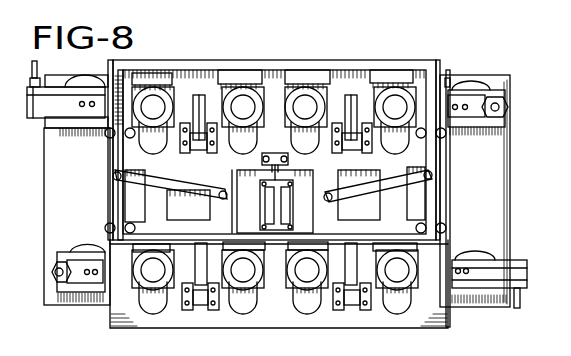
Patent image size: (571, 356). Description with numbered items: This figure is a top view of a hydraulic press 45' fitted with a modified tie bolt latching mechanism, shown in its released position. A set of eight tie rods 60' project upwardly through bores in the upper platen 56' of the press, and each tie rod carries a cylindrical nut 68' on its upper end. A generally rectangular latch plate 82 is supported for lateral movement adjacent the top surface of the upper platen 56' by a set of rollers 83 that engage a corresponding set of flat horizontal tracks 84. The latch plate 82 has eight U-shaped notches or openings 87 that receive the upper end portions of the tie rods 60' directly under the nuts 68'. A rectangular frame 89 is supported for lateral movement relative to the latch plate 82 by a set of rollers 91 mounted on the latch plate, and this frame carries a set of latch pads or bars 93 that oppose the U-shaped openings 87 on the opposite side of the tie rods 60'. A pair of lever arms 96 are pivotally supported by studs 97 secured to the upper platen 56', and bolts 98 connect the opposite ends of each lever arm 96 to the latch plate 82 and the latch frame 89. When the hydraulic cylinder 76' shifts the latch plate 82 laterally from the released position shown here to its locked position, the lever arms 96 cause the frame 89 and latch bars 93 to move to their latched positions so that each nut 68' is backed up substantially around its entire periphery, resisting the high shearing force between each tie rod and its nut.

The press 45' is at (496, 172).
The upper platen 56' is at (493, 191).
The tie rods 60' is at (274, 81).
The cylindrical nuts 68' is at (309, 287).
The hydraulic cylinder 76' is at (272, 182).
The latch plate 82 is at (110, 323).
The rollers 83 is at (343, 160).
The flat horizontal tracks 84 is at (350, 96).
The U-shaped notches 87 is at (258, 312).
The rectangular frame 89 is at (423, 62).
The rollers 91 is at (425, 135).
The latch bars 93 is at (230, 74).
The lever arms 96 is at (195, 188).
The studs 97 is at (125, 186).
The bolts 98 is at (116, 175).